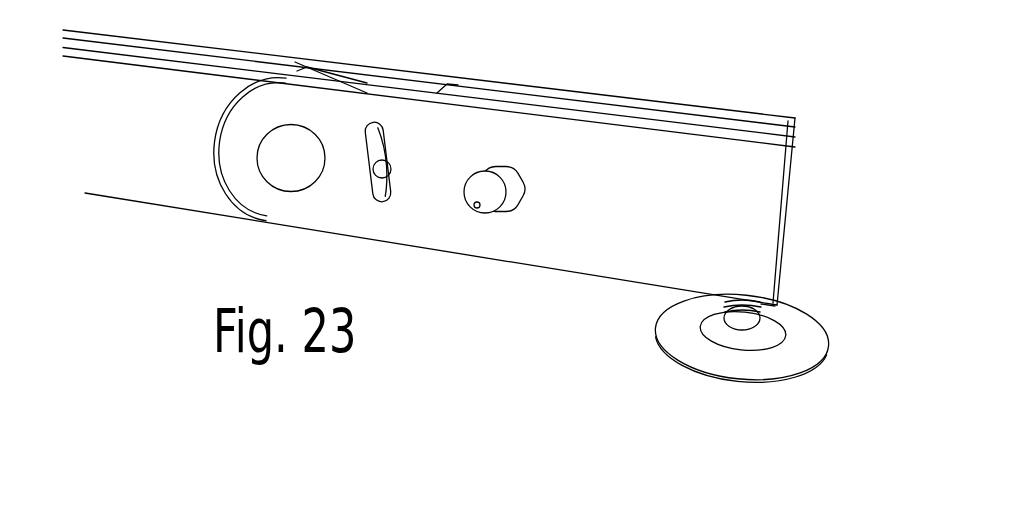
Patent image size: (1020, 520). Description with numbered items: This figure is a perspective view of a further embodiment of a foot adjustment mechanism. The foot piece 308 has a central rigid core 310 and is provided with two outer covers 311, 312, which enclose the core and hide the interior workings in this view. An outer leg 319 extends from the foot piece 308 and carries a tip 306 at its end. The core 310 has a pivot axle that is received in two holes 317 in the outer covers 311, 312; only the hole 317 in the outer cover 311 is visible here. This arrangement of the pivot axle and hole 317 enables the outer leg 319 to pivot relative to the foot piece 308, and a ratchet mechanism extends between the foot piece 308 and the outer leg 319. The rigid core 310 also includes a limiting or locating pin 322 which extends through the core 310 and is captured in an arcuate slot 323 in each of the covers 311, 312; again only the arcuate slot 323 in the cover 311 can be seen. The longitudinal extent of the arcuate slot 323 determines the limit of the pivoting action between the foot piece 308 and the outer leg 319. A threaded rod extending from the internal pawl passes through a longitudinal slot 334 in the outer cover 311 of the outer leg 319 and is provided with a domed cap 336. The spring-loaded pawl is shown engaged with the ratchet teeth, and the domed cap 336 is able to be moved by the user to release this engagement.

The tip 306 is at (815, 355).
The foot piece 308 is at (158, 85).
The central rigid core 310 is at (118, 48).
The outer cover 311 is at (155, 190).
The outer cover 312 is at (247, 52).
The hole 317 is at (300, 193).
The outer leg 319 is at (753, 210).
The limiting or locating pin 322 is at (383, 172).
The arcuate slot 323 is at (388, 197).
The longitudinal slot 334 is at (528, 190).
The domed cap 336 is at (492, 208).